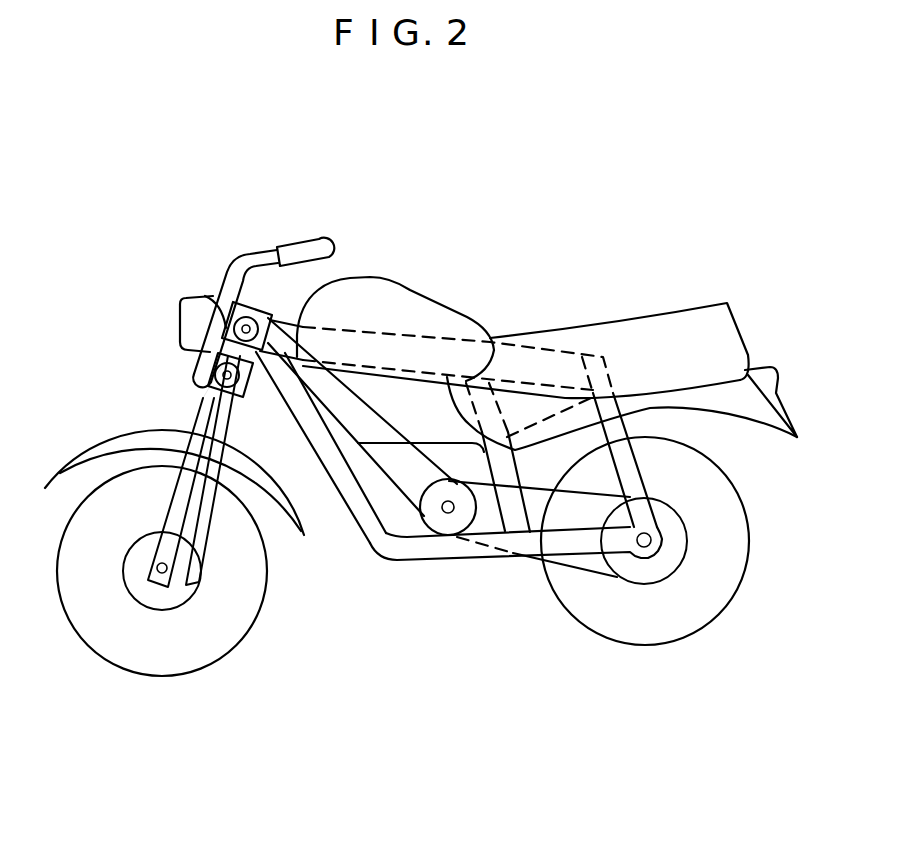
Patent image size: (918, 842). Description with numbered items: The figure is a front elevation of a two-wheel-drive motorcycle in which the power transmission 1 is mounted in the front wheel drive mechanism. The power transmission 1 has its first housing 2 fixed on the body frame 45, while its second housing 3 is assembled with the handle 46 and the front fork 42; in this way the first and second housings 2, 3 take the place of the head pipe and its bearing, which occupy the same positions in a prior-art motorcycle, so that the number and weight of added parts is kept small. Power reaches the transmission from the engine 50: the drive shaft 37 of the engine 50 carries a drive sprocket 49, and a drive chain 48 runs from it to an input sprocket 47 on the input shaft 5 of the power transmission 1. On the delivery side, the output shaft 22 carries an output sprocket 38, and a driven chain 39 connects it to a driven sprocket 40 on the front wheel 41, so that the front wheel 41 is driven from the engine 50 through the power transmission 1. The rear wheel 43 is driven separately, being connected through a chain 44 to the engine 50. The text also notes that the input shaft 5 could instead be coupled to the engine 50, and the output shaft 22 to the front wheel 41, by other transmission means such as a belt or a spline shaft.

The power transmission 1 is at (258, 273).
The first housing 2 is at (222, 298).
The second housing 3 is at (248, 384).
The input shaft 5 is at (272, 313).
The output shaft 22 is at (205, 378).
The drive shaft 37 is at (393, 557).
The output sprocket 38 is at (199, 410).
The driven chain 39 is at (213, 523).
The driven sprocket 40 is at (187, 590).
The front wheel 41 is at (117, 650).
The front fork 42 is at (180, 508).
The rear wheel 43 is at (702, 617).
The chain 44 is at (580, 570).
The body frame 45 is at (378, 330).
The handle 46 is at (297, 248).
The input sprocket 47 is at (198, 298).
The drive chain 48 is at (313, 433).
The drive sprocket 49 is at (447, 514).
The engine 50 is at (390, 525).